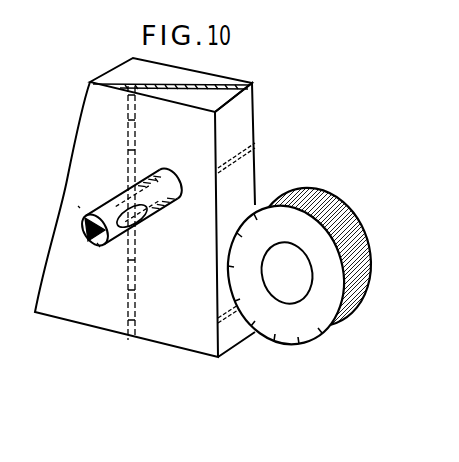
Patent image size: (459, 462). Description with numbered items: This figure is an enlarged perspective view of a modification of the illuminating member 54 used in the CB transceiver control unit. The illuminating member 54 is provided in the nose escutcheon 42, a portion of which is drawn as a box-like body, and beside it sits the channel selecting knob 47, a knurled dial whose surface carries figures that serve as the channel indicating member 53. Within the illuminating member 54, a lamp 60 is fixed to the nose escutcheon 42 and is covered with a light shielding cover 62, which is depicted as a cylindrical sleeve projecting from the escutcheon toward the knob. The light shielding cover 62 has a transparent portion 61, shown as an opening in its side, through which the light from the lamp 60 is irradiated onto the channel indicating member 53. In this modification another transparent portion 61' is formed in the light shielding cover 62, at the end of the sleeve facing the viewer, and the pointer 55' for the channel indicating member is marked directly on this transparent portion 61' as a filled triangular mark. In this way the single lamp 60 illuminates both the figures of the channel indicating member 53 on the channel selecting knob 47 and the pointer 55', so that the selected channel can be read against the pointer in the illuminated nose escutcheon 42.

The nose escutcheon 42 is at (96, 315).
The channel selecting knob 47 is at (274, 270).
The channel indicating member 53 is at (277, 324).
The illuminating member 54 is at (77, 206).
The pointer 55' is at (78, 247).
The lamp 60 is at (118, 191).
The transparent portion 61 is at (152, 226).
The another transparent portion 61' is at (102, 263).
The light shielding cover 62 is at (155, 178).